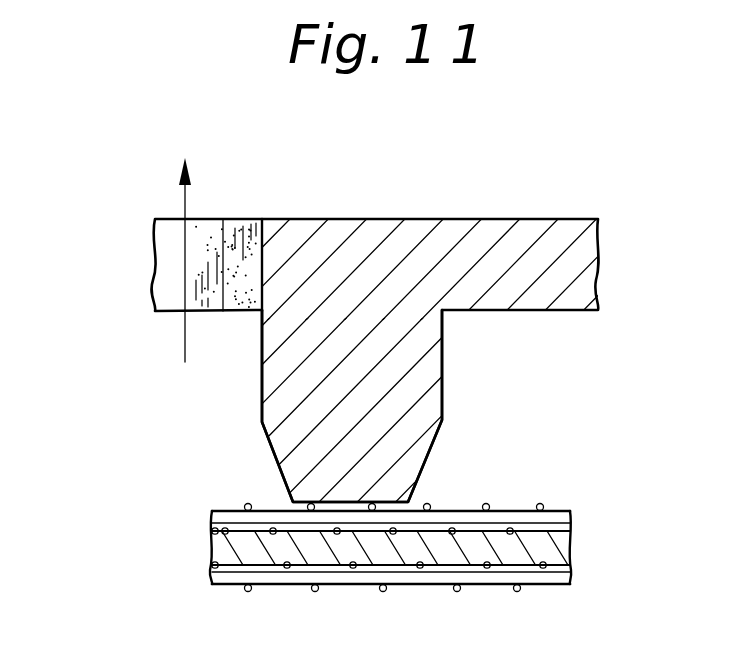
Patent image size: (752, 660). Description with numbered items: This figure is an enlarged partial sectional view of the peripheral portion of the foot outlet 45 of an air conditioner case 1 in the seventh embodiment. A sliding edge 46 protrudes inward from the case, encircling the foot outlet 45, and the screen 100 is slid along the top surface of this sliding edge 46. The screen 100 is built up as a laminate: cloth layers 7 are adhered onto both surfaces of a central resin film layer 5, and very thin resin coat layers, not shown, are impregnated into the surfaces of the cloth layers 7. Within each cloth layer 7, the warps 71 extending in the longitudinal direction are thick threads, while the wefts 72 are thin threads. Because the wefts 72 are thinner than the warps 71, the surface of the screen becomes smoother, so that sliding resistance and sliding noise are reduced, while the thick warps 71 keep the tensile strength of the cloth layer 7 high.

The air conditioner case 1 is at (490, 208).
The foot outlet 45 is at (228, 228).
The sliding edge 46 is at (392, 408).
The screen 100 is at (192, 548).
The cloth layer 7 is at (542, 517).
The warp 71 is at (500, 516).
The weft 72 is at (543, 507).
The resin film layer 5 is at (280, 560).